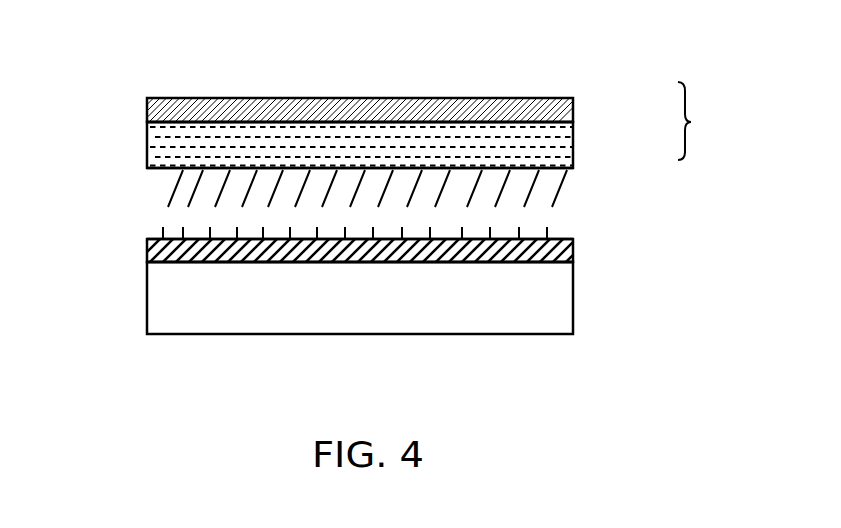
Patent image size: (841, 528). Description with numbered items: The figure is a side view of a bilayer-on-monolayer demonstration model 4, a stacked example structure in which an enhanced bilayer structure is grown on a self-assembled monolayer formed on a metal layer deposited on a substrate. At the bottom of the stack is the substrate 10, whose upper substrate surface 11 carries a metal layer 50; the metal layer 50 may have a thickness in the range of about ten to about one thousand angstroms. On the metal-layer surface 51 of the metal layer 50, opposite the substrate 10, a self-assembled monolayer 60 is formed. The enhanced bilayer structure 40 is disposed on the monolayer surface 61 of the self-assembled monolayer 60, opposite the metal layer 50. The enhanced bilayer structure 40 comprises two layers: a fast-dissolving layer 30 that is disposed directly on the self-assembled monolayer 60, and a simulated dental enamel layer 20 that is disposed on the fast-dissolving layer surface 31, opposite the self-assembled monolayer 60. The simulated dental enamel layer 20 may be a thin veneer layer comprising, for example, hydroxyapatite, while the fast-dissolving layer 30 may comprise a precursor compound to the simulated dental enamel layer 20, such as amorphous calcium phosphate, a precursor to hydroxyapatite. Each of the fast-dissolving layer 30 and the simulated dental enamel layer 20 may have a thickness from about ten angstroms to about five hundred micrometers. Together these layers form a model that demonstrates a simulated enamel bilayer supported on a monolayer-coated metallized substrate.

The bilayer-on-monolayer demonstration model 4 is at (464, 70).
The substrate 10 is at (573, 310).
The substrate surface 11 is at (147, 263).
The simulated dental enamel layer 20 is at (573, 110).
The fast-dissolving layer 30 is at (573, 147).
The fast-dissolving layer surface 31 is at (147, 122).
The enhanced bilayer structure 40 is at (707, 121).
The metal layer 50 is at (573, 251).
The metal-layer surface 51 is at (147, 238).
The self-assembled monolayer 60 is at (568, 209).
The monolayer surface 61 is at (147, 169).